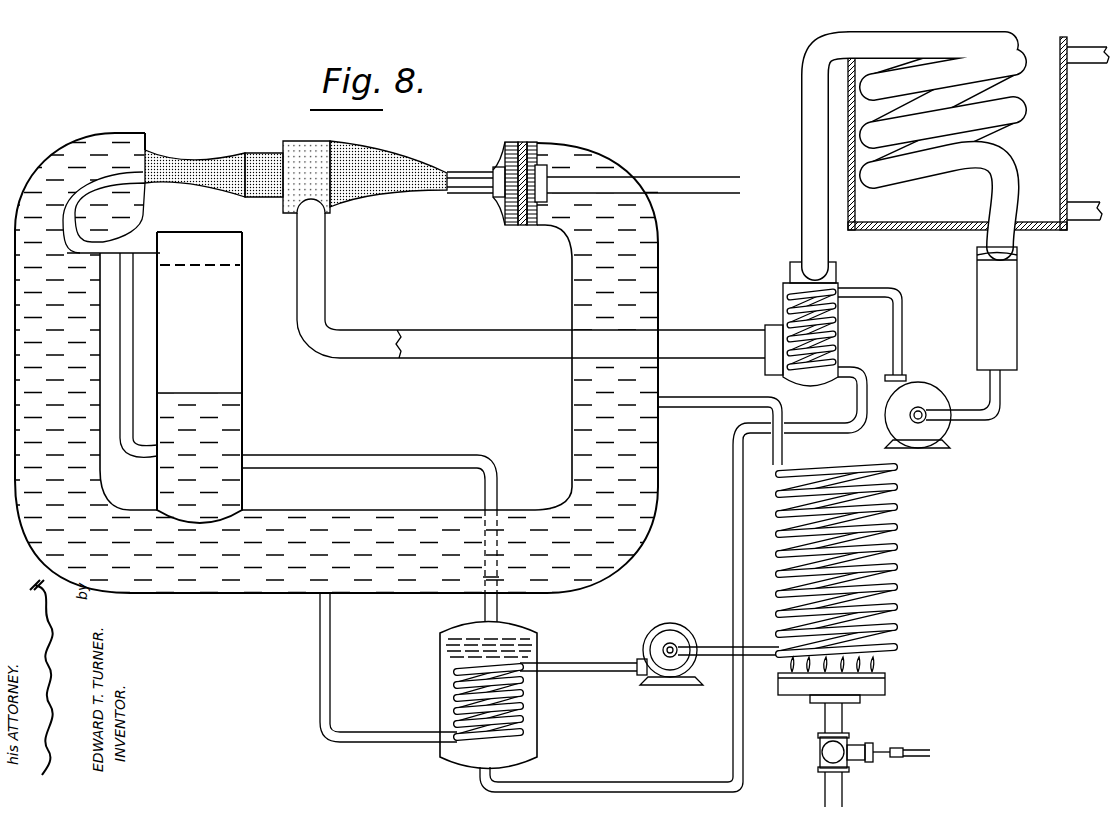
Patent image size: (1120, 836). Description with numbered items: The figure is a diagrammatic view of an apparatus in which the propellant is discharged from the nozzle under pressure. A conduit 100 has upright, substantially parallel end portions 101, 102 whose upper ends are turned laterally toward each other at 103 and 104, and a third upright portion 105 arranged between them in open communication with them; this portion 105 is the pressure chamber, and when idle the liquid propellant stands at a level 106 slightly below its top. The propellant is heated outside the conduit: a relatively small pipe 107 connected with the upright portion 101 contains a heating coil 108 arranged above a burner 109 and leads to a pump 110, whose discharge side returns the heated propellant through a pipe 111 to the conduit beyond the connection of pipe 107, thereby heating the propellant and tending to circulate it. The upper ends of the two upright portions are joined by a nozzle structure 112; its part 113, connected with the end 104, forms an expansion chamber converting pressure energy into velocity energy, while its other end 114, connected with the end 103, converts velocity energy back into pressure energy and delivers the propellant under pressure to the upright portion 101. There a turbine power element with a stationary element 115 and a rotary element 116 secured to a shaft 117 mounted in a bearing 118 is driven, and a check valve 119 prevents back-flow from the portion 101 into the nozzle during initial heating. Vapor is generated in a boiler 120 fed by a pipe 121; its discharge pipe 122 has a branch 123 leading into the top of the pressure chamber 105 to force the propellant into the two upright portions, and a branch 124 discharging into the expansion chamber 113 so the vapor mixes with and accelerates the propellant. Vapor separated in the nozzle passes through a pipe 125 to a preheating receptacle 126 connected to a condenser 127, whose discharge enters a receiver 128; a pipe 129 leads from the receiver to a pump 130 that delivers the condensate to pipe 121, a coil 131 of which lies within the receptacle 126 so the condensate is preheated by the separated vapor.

The conduit 100 is at (363, 518).
The upright end portion 101 is at (615, 373).
The upright end portion 102 is at (336, 363).
The laterally turned upper end 103 is at (508, 142).
The laterally turned upper end 104 is at (132, 130).
The third upright portion 105 is at (240, 422).
The propellant level 106 is at (213, 263).
The pipe 107 is at (712, 403).
The heating coil 108 is at (902, 547).
The burner 109 is at (865, 685).
The pump 110 is at (667, 667).
The pipe 111 is at (327, 658).
The nozzle structure 112 is at (267, 160).
The expansion chamber 113 is at (200, 162).
The nozzle end portion 114 is at (427, 190).
The stationary element 115 is at (525, 142).
The rotary element 116 is at (535, 143).
The shaft 117 is at (598, 185).
The bearing 118 is at (652, 176).
The check valve 119 is at (482, 183).
The boiler 120 is at (447, 667).
The pipe 121 is at (900, 322).
The discharge pipe 122 is at (363, 457).
The branch 123 is at (148, 238).
The branch 124 is at (100, 183).
The pipe 125 is at (531, 285).
The preheating receptacle 126 is at (782, 303).
The condenser 127 is at (1007, 155).
The receiver 128 is at (997, 308).
The pipe 129 is at (983, 418).
The pump 130 is at (925, 400).
The coil 131 is at (835, 322).